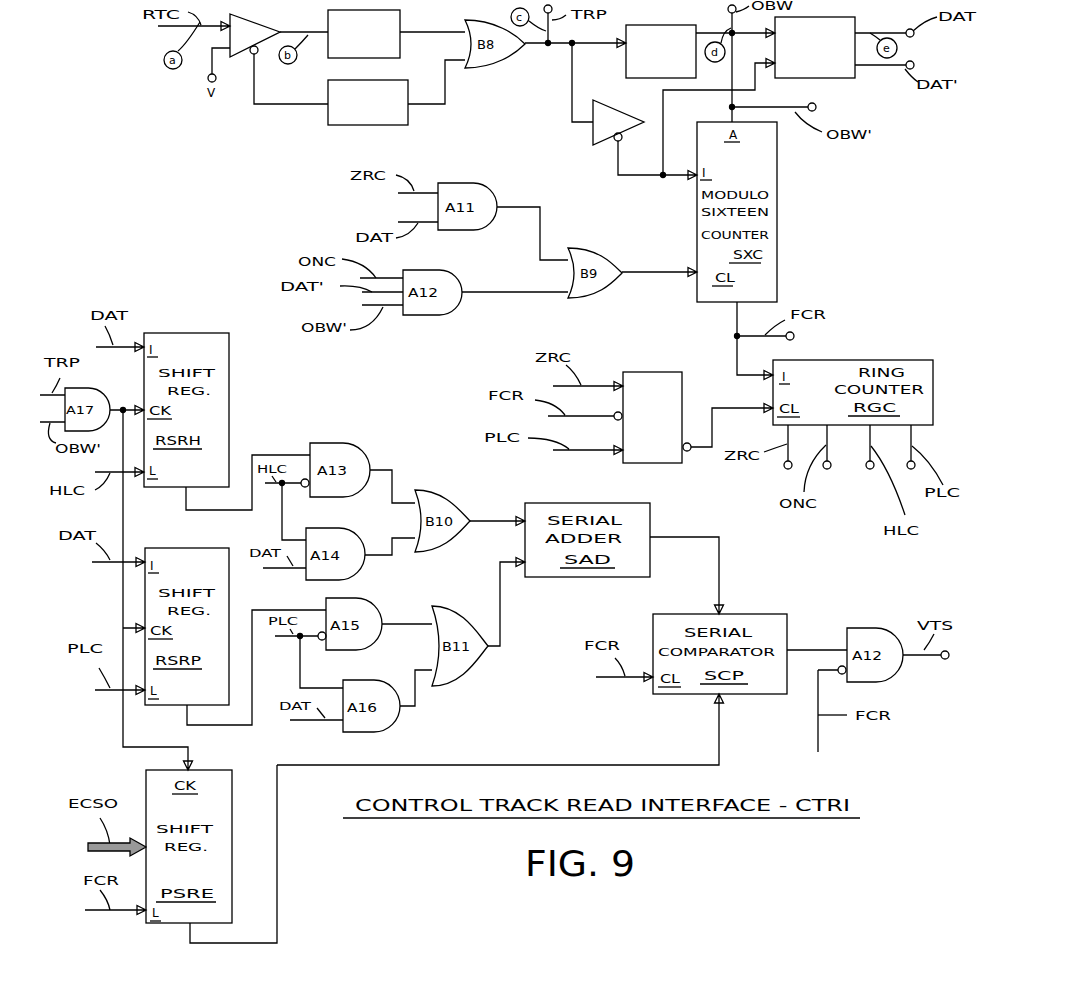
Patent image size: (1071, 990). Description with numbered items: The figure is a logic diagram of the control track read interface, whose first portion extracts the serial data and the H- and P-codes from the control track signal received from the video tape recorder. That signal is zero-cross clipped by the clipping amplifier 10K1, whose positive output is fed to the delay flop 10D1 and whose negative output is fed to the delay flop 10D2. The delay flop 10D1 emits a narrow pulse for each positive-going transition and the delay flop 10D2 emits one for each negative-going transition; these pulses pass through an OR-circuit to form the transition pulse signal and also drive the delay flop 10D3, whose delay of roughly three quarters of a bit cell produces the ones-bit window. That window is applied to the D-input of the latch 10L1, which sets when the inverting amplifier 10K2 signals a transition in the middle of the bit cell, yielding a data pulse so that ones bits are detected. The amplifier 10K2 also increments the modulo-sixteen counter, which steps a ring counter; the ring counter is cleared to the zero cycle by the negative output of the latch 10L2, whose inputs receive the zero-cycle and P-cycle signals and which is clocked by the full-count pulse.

The clipping amplifier 10K1 is at (245, 28).
The delay flop 10D1 is at (400, 17).
The delay flop 10D2 is at (327, 114).
The inverting amplifier 10K2 is at (612, 100).
The delay flop 10D3 is at (640, 25).
The latch 10L1 is at (856, 24).
The latch 10L2 is at (641, 372).